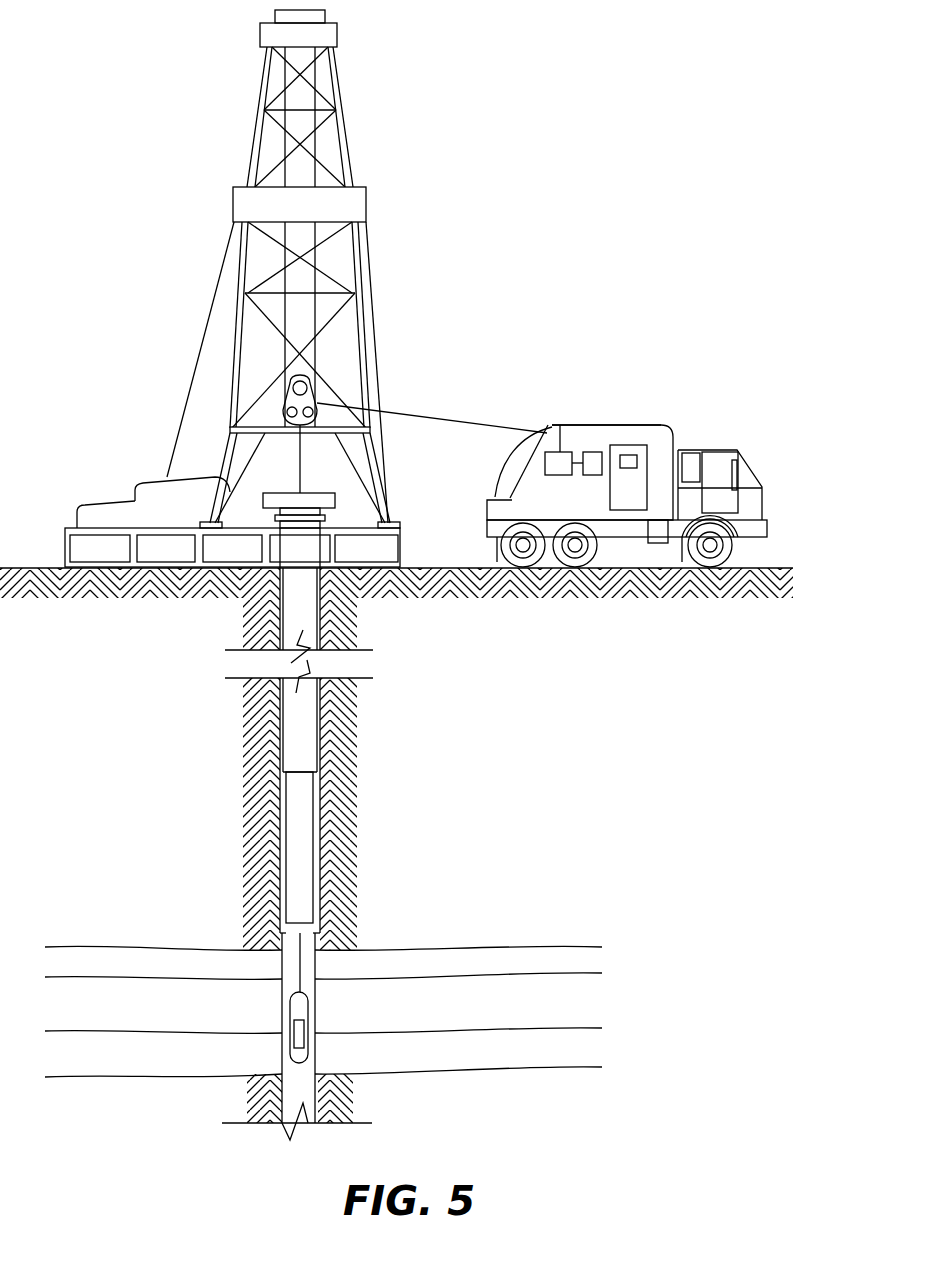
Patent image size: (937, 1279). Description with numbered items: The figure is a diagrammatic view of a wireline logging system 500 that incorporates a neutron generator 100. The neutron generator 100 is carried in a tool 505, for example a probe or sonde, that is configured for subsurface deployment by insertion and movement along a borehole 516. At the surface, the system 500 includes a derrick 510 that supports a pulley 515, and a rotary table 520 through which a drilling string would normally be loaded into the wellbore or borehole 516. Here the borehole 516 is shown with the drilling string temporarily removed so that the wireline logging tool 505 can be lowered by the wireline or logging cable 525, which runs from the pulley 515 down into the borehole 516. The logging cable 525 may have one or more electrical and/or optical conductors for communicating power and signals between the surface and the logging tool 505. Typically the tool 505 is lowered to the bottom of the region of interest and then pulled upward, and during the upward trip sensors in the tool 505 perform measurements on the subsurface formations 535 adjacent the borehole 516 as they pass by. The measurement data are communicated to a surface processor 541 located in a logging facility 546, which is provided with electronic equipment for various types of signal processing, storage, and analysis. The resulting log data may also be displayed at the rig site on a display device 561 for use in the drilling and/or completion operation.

The wireline logging system 500 is at (114, 41).
The derrick 510 is at (348, 136).
The pulley 515 is at (318, 393).
The rotary table 520 is at (336, 501).
The wireline or logging cable 525 is at (418, 418).
The surface processor 541 is at (550, 452).
The logging facility 546 is at (585, 425).
The display device 561 is at (630, 452).
The borehole 516 is at (298, 960).
The tool 505 is at (309, 1010).
The neutron generator 100 is at (305, 1034).
The subsurface formations 535 is at (607, 940).